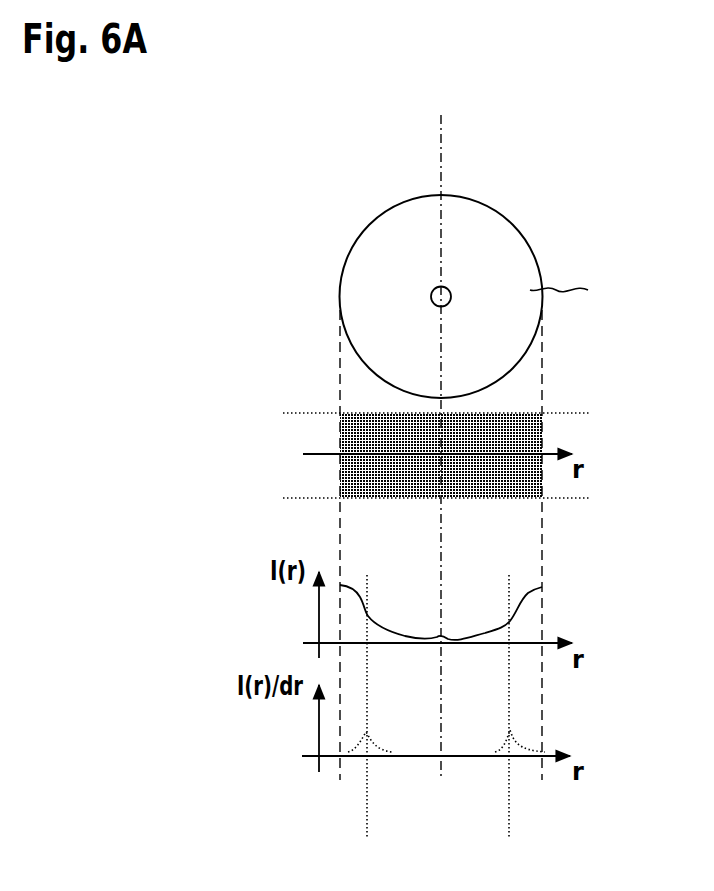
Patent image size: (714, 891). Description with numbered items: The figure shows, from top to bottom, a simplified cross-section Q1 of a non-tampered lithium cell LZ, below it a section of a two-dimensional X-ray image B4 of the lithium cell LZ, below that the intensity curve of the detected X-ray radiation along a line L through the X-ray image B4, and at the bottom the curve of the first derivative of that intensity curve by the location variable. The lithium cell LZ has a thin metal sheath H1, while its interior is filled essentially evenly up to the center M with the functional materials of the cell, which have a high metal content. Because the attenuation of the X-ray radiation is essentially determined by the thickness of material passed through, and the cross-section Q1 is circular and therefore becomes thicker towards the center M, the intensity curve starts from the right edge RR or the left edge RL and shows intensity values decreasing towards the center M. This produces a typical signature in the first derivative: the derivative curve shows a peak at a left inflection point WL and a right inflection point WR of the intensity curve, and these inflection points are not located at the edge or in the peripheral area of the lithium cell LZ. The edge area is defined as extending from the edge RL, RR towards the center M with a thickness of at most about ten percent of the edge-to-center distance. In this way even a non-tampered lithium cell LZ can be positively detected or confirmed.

The thin metal sheath H1 is at (404, 197).
The cross-section Q1 is at (483, 222).
The center M is at (444, 451).
The left edge RL is at (340, 240).
The right edge RR is at (542, 240).
The lithium cell LZ is at (579, 286).
The 2D X-ray image B4 is at (566, 397).
The line L is at (360, 446).
The left inflection point WL is at (370, 725).
The right inflection point WR is at (519, 725).